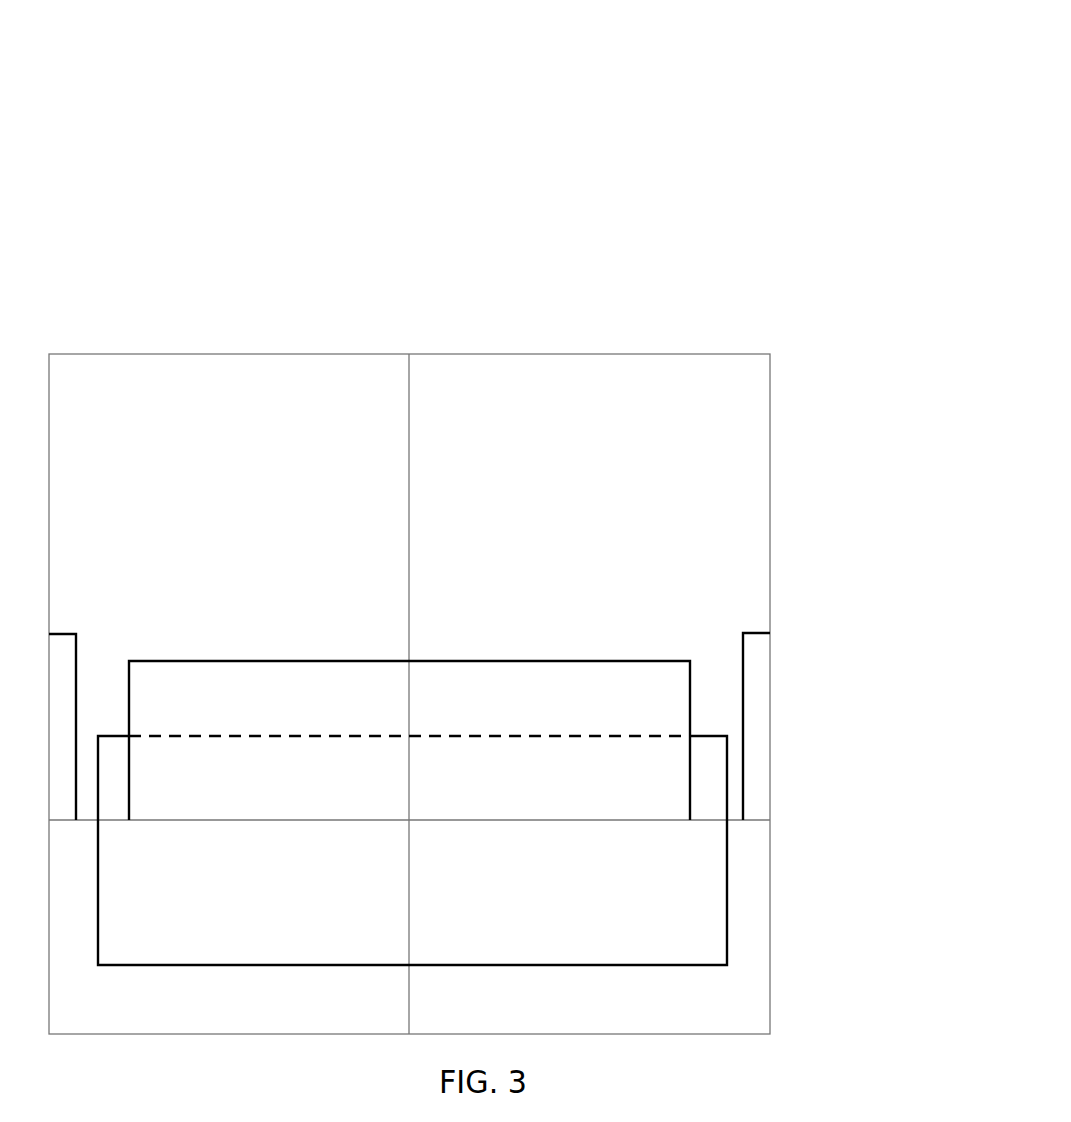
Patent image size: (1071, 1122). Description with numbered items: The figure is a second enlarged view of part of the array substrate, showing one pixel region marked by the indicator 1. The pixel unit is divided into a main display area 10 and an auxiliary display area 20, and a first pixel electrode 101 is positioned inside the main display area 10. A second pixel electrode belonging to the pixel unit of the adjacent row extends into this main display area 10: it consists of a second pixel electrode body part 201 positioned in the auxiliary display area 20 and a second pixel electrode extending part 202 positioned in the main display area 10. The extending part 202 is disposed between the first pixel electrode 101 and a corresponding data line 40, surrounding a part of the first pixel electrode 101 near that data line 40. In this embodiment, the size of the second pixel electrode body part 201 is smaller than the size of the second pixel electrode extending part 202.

The electronic device 1 is at (214, 118).
The main display area 10 is at (652, 426).
The first pixel electrode 101 is at (598, 660).
The auxiliary display area 20 is at (526, 830).
The second pixel electrode body part 201 is at (727, 892).
The second pixel electrode extending part 202 is at (728, 773).
The data line 40 is at (759, 633).